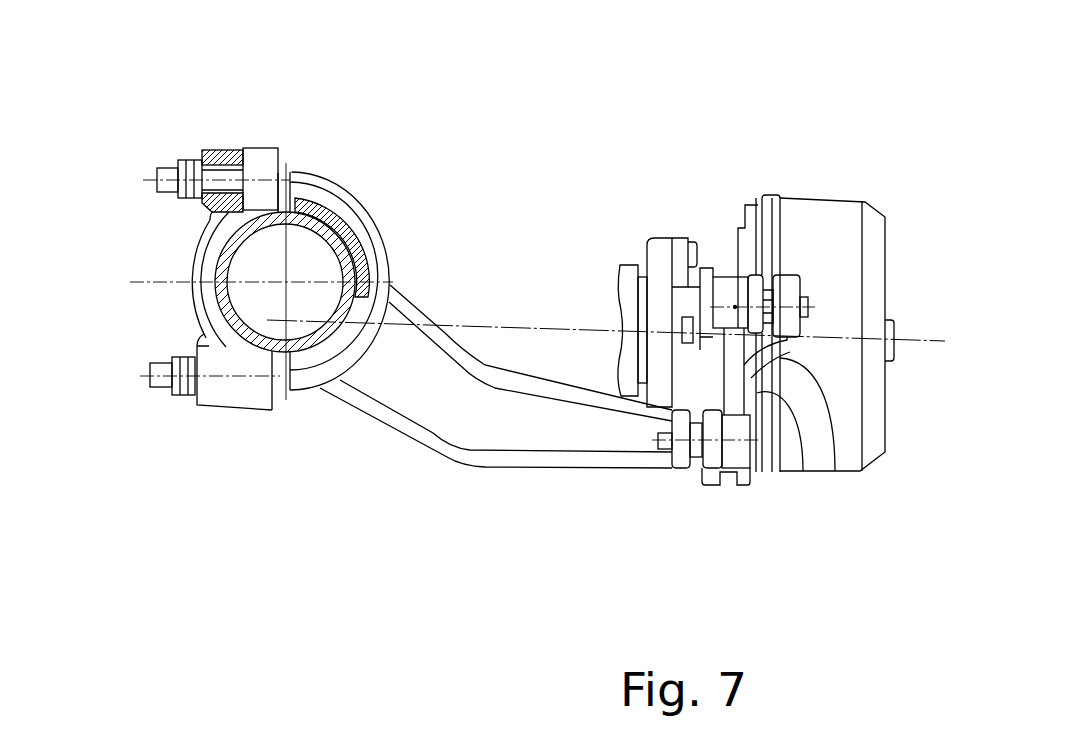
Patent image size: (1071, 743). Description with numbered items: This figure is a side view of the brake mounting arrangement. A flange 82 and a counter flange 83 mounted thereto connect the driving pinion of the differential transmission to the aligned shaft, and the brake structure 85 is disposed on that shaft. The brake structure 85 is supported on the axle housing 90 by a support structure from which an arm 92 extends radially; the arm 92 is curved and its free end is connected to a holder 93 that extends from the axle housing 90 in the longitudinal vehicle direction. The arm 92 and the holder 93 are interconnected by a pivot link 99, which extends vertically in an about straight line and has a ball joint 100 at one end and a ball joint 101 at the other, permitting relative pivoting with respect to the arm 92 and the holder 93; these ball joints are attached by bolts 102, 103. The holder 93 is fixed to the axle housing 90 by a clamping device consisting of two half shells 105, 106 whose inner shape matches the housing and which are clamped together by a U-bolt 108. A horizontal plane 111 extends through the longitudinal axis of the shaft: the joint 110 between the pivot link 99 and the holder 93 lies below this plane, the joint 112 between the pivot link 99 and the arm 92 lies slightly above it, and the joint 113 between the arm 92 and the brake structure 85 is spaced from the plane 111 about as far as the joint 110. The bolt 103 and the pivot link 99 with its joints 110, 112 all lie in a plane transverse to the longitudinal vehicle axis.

The flange 82 is at (640, 262).
The counter flange 83 is at (655, 260).
The brake structure 85 is at (823, 187).
The axle housing 90 is at (217, 263).
The arm 92 is at (835, 473).
The holder 93 is at (458, 405).
The pivot link 99 is at (803, 473).
The ball joint 100 is at (730, 300).
The ball joint 101 is at (720, 485).
The bolt 102 is at (658, 441).
The bolt 103 is at (810, 298).
The half shell 105 is at (263, 147).
The half shell 106 is at (313, 173).
The U-bolt 108 is at (163, 187).
The joint 110 is at (750, 473).
The horizontal plane 111 is at (500, 322).
The joint 112 is at (737, 305).
The joint 113 is at (683, 487).